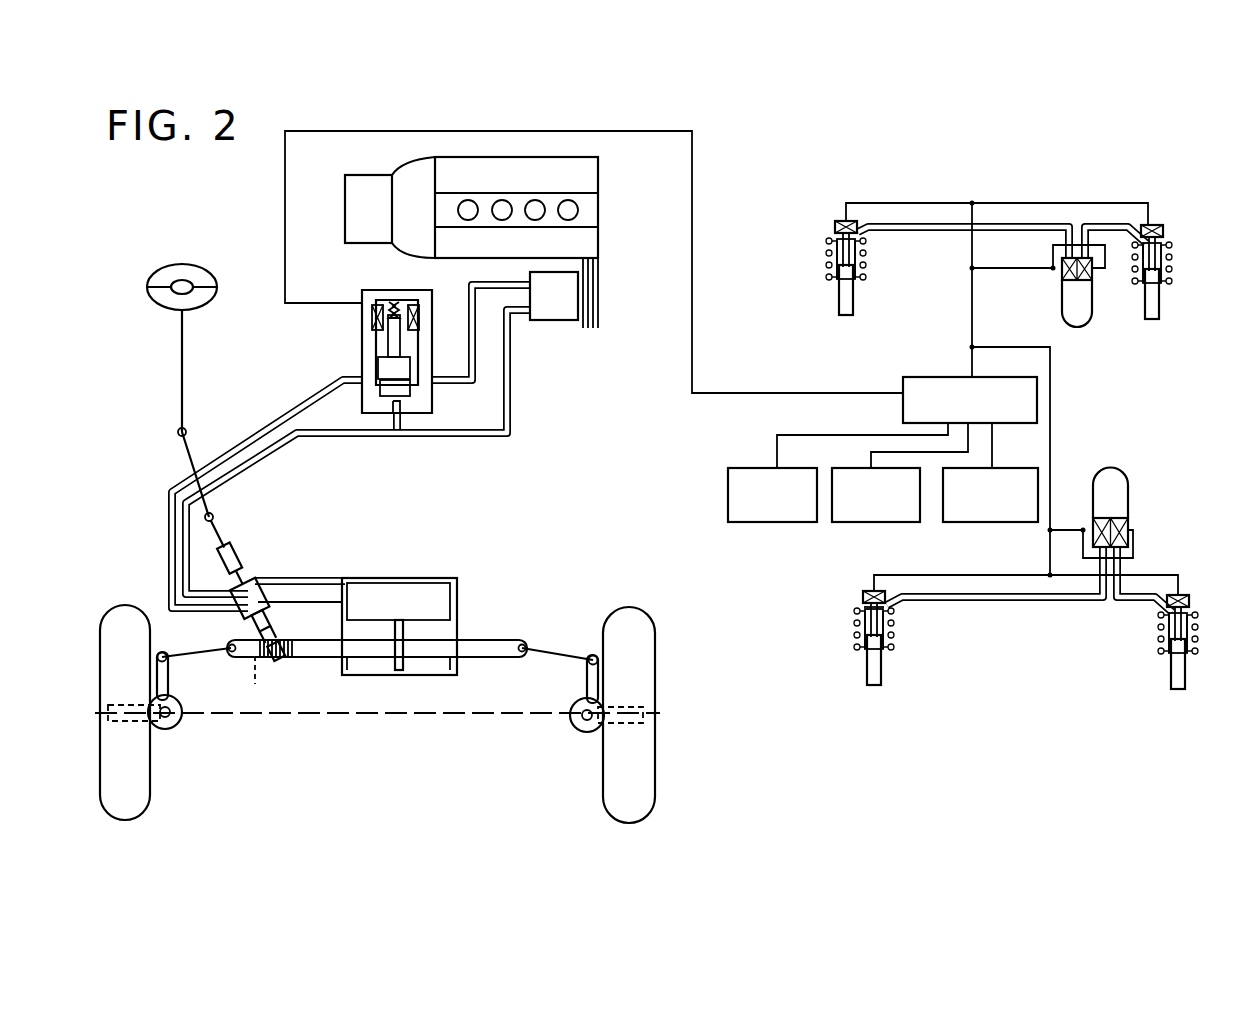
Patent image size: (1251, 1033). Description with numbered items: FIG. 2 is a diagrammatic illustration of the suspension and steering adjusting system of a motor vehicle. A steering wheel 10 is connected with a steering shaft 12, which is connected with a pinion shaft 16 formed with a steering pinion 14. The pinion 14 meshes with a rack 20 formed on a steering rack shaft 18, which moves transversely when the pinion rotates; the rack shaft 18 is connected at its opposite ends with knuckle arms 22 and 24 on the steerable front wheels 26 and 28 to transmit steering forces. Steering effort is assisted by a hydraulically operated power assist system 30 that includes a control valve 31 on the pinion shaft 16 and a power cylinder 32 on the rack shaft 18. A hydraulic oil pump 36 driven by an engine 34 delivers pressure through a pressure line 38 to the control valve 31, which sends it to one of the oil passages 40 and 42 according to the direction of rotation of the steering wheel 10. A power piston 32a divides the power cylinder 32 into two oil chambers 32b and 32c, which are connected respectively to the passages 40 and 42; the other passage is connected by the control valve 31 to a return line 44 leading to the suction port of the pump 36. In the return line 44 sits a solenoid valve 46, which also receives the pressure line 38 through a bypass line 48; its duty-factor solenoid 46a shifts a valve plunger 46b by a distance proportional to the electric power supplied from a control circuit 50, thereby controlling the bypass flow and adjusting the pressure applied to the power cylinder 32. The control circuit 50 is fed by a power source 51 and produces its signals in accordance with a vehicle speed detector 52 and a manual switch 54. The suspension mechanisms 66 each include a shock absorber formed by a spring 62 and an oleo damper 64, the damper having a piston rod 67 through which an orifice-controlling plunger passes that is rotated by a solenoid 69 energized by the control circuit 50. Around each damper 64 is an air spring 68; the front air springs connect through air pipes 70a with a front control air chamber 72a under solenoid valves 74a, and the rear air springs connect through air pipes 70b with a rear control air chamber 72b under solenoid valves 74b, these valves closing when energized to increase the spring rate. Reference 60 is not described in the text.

The steering wheel 10 is at (190, 267).
The steering shaft 12 is at (180, 360).
The steering pinion 14 is at (290, 625).
The pinion shaft 16 is at (245, 544).
The steering rack shaft 18 is at (331, 658).
The rack 20 is at (259, 681).
The knuckle arm 22 is at (172, 681).
The knuckle arm 24 is at (579, 673).
The front wheel 26 is at (150, 773).
The front wheel 28 is at (603, 780).
The power assist system 30 is at (430, 441).
The control valve 31 is at (273, 577).
The power cylinder 32 is at (457, 632).
The power piston 32a is at (402, 666).
The oil chamber 32b is at (365, 676).
The oil chamber 32c is at (458, 668).
The engine 34 is at (598, 193).
The hydraulic oil pump 36 is at (555, 322).
The pressure line 38 is at (510, 408).
The oil passage 40 is at (328, 600).
The oil passage 42 is at (347, 582).
The return line 44 is at (295, 415).
The solenoid valve 46 is at (361, 344).
The solenoid 46a is at (361, 326).
The valve plunger 46b is at (438, 312).
The bypass line 48 is at (393, 435).
The control circuit 50 is at (947, 382).
The power source 51 is at (855, 522).
The vehicle speed detector 52 is at (955, 522).
The manual switch 54 is at (754, 522).
The suspension system 60 is at (1030, 559).
The spring 62 is at (860, 274).
The oleo damper 64 is at (843, 301).
The suspension mechanism 66 is at (823, 270).
The piston rod 67 is at (856, 611).
The air spring 68 is at (861, 260).
The solenoid 69 is at (835, 222).
The air pipe 70a is at (964, 600).
The air pipe 70b is at (1027, 223).
The front control air chamber 72a is at (1127, 486).
The rear control air chamber 72b is at (1077, 323).
The solenoid valve 74a is at (1093, 518).
The solenoid valve 74b is at (1062, 280).